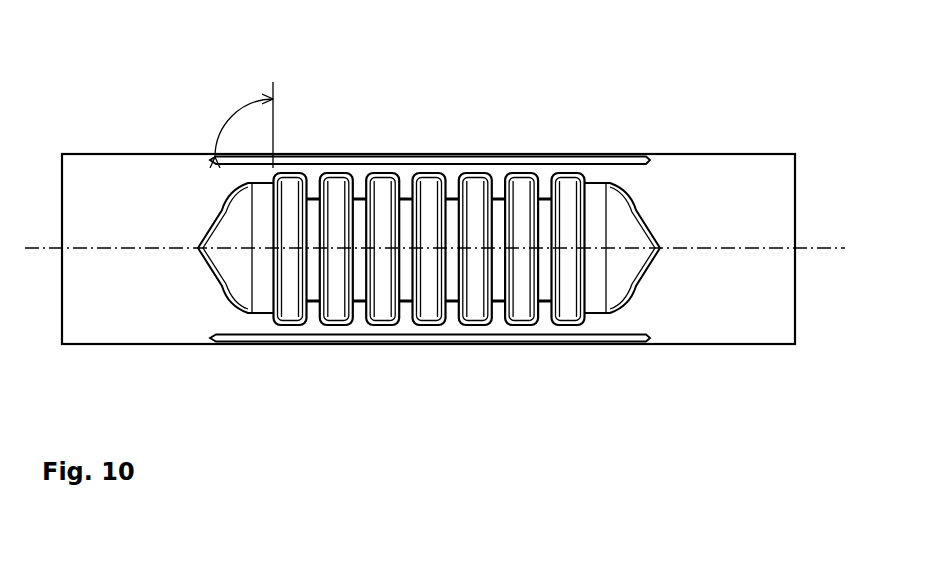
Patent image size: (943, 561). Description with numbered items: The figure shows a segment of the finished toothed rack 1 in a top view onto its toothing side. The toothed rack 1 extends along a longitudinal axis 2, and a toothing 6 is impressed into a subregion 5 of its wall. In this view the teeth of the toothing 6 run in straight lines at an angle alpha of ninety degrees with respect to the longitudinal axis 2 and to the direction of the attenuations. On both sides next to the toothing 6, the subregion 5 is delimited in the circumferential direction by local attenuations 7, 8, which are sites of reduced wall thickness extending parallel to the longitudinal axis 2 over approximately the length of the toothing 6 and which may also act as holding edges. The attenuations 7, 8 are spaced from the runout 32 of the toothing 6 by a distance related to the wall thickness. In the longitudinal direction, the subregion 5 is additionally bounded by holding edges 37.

The toothed rack 1 is at (140, 132).
The longitudinal axis 2 is at (134, 249).
The subregion 5 is at (363, 327).
The toothing 6 is at (432, 215).
The attenuation 7 is at (508, 338).
The attenuation 8 is at (552, 165).
The runout 32 is at (429, 235).
The holding edges 37 is at (252, 280).